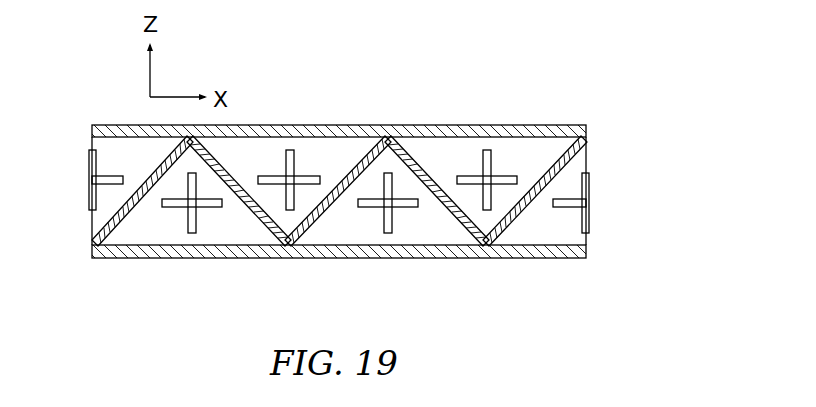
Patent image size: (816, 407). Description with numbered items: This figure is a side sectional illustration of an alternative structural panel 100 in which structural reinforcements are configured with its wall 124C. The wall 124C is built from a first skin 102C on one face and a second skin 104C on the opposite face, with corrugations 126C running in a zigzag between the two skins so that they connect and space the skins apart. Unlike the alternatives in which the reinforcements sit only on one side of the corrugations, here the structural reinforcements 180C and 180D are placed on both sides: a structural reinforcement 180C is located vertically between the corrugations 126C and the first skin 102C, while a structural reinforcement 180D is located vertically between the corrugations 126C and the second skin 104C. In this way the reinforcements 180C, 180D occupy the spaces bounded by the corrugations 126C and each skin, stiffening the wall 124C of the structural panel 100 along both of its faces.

The structural panel 100 is at (600, 100).
The first skin 102C is at (90, 125).
The second skin 104C is at (95, 258).
The wall 124C is at (588, 160).
The corrugations 126C is at (430, 163).
The structural reinforcement 180C is at (304, 163).
The structural reinforcement 180D is at (400, 217).